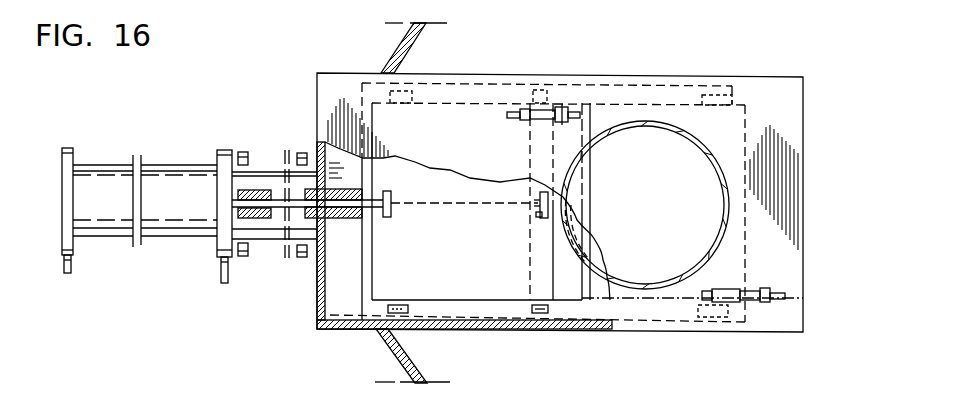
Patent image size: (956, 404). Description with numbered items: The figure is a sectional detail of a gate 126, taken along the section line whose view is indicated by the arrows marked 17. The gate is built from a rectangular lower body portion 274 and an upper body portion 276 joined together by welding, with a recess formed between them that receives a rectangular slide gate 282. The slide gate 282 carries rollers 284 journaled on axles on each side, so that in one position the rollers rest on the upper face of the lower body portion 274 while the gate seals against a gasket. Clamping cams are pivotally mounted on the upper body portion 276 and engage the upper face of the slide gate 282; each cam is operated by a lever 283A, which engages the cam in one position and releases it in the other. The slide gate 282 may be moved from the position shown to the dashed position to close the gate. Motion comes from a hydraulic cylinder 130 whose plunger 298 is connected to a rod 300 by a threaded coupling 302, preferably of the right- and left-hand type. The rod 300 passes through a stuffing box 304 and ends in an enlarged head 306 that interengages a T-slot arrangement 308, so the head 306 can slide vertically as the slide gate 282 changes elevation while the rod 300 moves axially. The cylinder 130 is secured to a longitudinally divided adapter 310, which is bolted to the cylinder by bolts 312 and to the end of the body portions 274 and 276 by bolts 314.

The gate 126 is at (809, 190).
The hydraulic cylinder 130 is at (150, 235).
The lower body portion 274 is at (370, 318).
The upper body portion 276 is at (638, 86).
The slide gate 282 is at (533, 282).
The lever 283A is at (550, 108).
The roller 284 is at (537, 314).
The plunger 298 is at (240, 152).
The rod 300 is at (423, 204).
The threaded coupling 302 is at (258, 190).
The stuffing box 304 is at (338, 193).
The enlarged head 306 is at (538, 210).
The T-slot arrangement 308 is at (540, 218).
The longitudinally divided adapter 310 is at (268, 235).
The bolts 312 is at (246, 258).
The bolts 314 is at (302, 258).
The section line 17- 17 is at (283, 296).